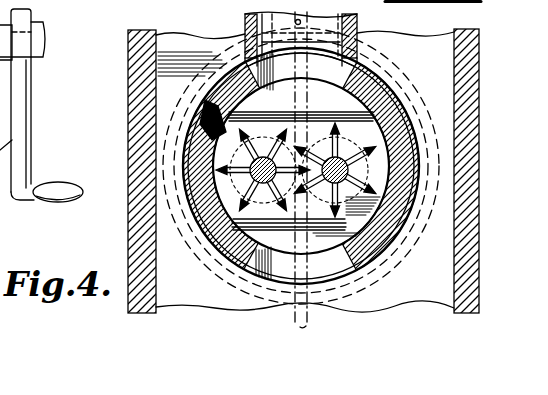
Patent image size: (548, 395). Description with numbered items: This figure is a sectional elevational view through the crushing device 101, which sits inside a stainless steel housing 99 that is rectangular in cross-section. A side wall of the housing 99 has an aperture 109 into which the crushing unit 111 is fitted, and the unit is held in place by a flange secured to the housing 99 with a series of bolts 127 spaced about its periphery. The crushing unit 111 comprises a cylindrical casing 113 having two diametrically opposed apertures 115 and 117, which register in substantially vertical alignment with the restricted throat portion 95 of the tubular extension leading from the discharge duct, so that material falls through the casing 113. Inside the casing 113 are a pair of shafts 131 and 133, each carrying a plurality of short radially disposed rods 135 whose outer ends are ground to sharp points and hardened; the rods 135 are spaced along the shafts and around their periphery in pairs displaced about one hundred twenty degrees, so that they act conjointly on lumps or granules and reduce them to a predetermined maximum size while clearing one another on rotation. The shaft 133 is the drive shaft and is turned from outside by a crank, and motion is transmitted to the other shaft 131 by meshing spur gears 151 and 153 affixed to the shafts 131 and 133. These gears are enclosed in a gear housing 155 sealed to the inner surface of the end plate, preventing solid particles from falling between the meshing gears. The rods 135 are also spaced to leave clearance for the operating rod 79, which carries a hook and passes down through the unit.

The operating rod 79 is at (307, 322).
The restricted throat portion 95 is at (358, 27).
The housing 99 is at (137, 63).
The crushing device 101 is at (418, 147).
The aperture 109 is at (381, 83).
The crushing unit 111 is at (416, 112).
The cylindrical casing 113 is at (204, 116).
The aperture 115 is at (246, 56).
The aperture 117 is at (258, 282).
The bolts 127 is at (519, 0).
The shaft 131 is at (184, 218).
The shaft 133 is at (393, 231).
The short radially disposed rods 135 is at (213, 163).
The spur gear 151 is at (200, 140).
The spur gear 153 is at (414, 182).
The gear housing 155 is at (369, 262).